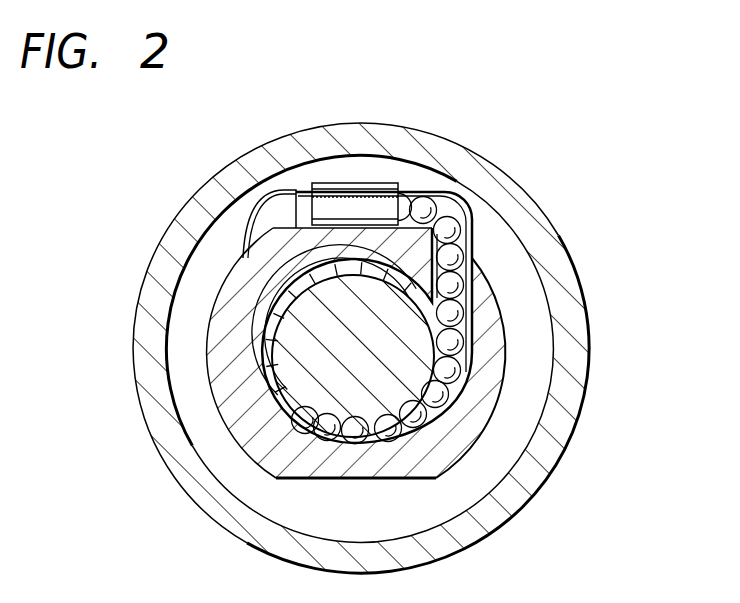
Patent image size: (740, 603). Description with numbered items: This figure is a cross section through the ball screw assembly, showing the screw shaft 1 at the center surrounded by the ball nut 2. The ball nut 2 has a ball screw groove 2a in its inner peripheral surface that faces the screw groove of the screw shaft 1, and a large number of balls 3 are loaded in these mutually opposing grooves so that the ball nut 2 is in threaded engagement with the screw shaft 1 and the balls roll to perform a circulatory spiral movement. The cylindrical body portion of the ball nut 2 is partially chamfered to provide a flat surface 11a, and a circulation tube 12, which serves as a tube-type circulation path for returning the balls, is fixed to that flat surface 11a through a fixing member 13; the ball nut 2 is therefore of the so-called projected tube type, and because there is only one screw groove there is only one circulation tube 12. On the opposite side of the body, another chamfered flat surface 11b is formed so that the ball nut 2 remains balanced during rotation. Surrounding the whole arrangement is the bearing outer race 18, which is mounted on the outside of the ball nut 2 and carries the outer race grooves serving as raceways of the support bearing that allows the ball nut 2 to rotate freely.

The screw shaft 1 is at (292, 334).
The ball nut 2 is at (490, 258).
The ball screw groove 2a is at (388, 432).
The balls 3 is at (323, 430).
The flat surface 11a is at (294, 195).
The chamfered flat surface 11b is at (297, 480).
The circulation tube 12 is at (265, 213).
The fixing member 13 is at (353, 202).
The bearing outer race 18 is at (573, 357).